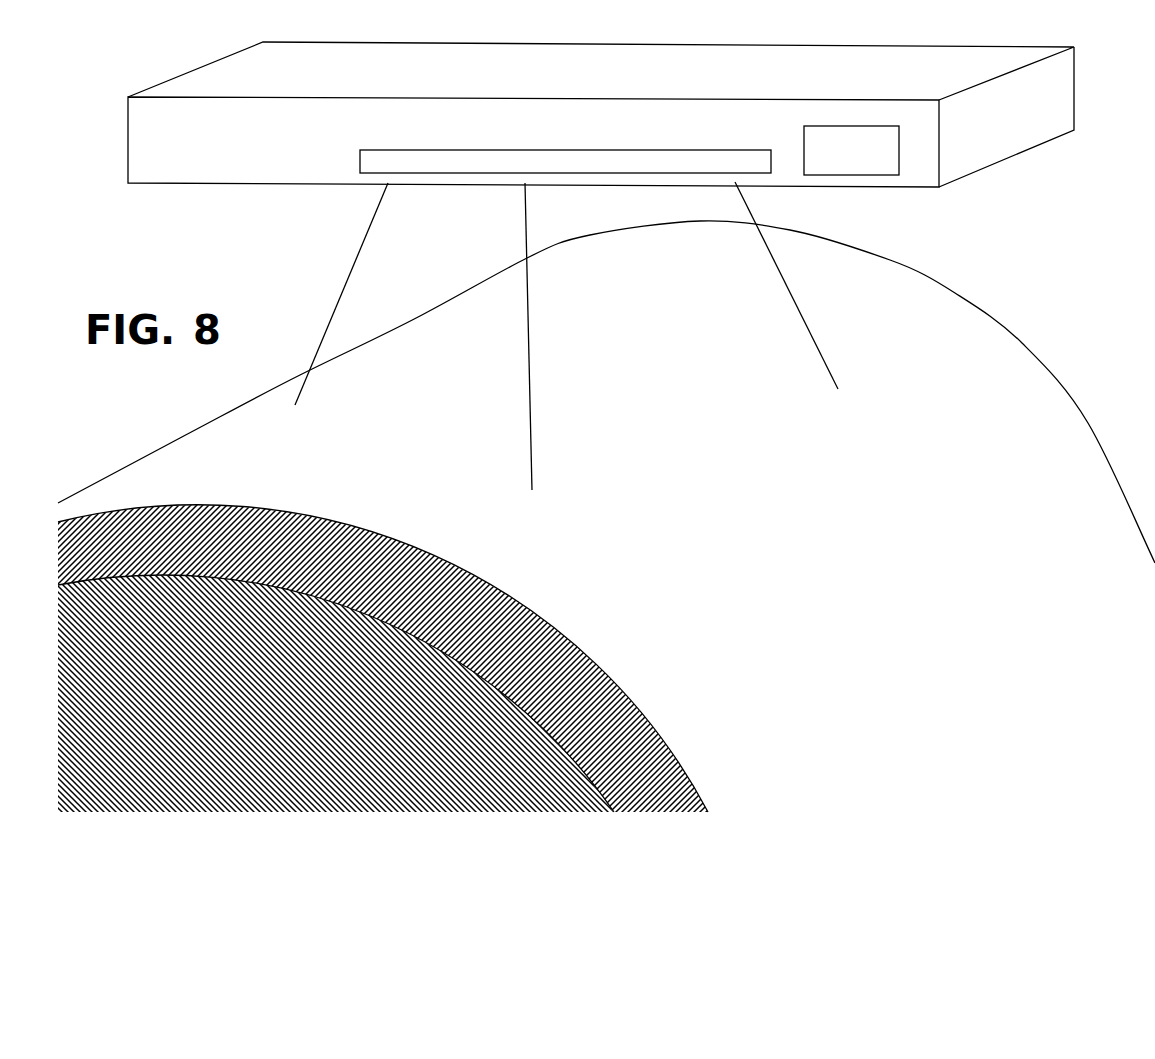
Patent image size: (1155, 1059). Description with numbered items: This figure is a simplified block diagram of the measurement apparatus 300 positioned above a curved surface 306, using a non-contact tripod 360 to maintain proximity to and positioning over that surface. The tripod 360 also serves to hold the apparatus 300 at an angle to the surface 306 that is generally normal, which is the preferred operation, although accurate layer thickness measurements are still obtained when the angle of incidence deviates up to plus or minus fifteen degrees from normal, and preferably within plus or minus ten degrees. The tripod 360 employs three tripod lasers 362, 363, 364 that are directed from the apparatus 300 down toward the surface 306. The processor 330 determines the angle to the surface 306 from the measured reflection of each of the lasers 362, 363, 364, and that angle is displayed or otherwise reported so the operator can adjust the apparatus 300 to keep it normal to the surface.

The measurement apparatus 300 is at (188, 78).
The curved surface 306 is at (1005, 397).
The processor 330 is at (803, 145).
The non-contact tripod 360 is at (358, 168).
The tripod laser 362 is at (335, 302).
The tripod laser 363 is at (530, 348).
The tripod laser 364 is at (812, 335).